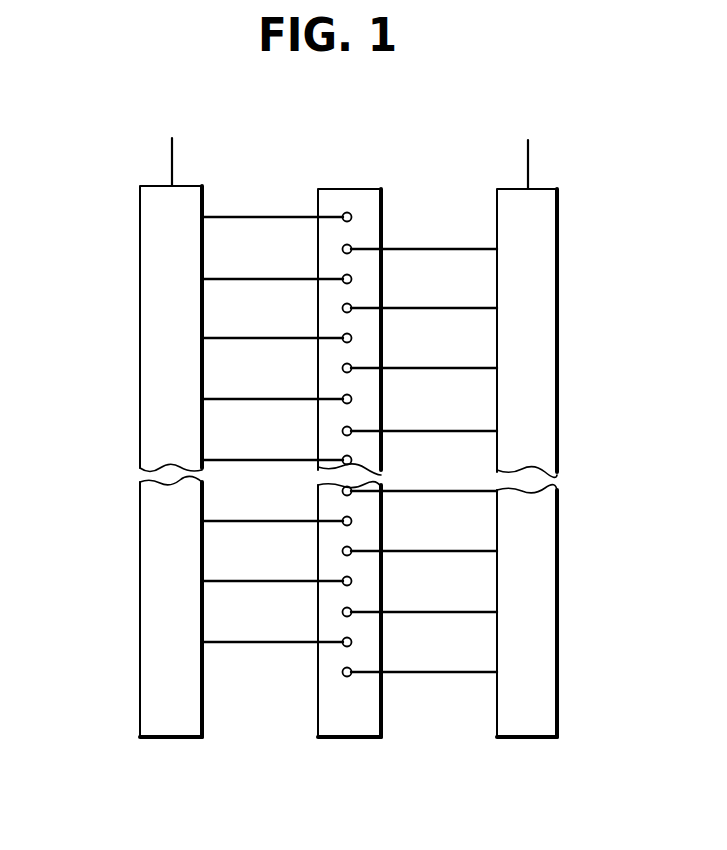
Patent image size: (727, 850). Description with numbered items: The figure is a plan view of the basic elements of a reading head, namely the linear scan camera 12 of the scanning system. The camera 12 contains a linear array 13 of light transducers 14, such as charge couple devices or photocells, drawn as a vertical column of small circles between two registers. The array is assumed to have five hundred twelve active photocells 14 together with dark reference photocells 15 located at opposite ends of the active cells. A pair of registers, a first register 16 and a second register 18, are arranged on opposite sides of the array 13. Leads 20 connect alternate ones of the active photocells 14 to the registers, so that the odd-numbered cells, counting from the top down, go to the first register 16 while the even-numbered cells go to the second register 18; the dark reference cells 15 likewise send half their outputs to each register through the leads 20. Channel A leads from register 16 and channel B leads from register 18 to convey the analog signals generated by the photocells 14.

The linear scan camera 12 is at (636, 178).
The linear array 13 is at (326, 188).
The light transducers 14 is at (352, 306).
The dark reference photocells 15 is at (350, 249).
The first register 16 is at (140, 275).
The second register 18 is at (519, 188).
The leads 20 is at (425, 248).